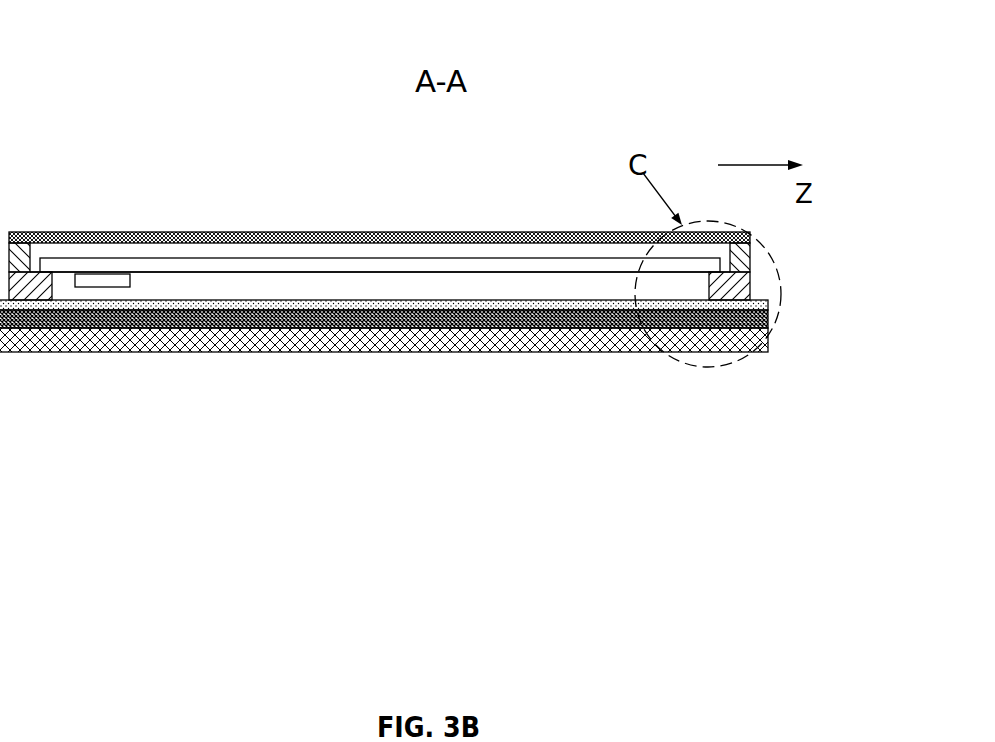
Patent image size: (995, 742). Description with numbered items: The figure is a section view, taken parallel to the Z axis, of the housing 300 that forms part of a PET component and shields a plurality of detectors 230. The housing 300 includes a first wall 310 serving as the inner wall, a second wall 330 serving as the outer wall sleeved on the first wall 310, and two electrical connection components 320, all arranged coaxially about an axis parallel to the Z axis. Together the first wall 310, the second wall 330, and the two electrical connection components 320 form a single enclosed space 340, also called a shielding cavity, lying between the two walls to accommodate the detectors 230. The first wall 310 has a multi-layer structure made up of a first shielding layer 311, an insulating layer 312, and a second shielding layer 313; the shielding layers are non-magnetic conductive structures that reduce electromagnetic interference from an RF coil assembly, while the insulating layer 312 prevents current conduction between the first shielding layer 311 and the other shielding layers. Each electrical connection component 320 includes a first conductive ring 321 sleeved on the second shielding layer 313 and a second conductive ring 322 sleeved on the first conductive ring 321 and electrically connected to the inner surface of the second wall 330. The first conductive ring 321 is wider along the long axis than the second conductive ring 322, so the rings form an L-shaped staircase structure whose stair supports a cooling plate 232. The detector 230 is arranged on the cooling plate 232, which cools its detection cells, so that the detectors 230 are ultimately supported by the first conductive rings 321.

The housing 300 is at (128, 98).
The second wall 330 is at (365, 238).
The electrical connection component 320 is at (452, 271).
The second conductive ring 322 is at (733, 260).
The first conductive ring 321 is at (735, 287).
The cooling plate 232 is at (177, 263).
The detector 230 is at (102, 276).
The single enclosed space 340 is at (463, 287).
The first wall 310 is at (452, 331).
The second shielding layer 313 is at (766, 306).
The insulating layer 312 is at (767, 322).
The first shielding layer 311 is at (764, 341).